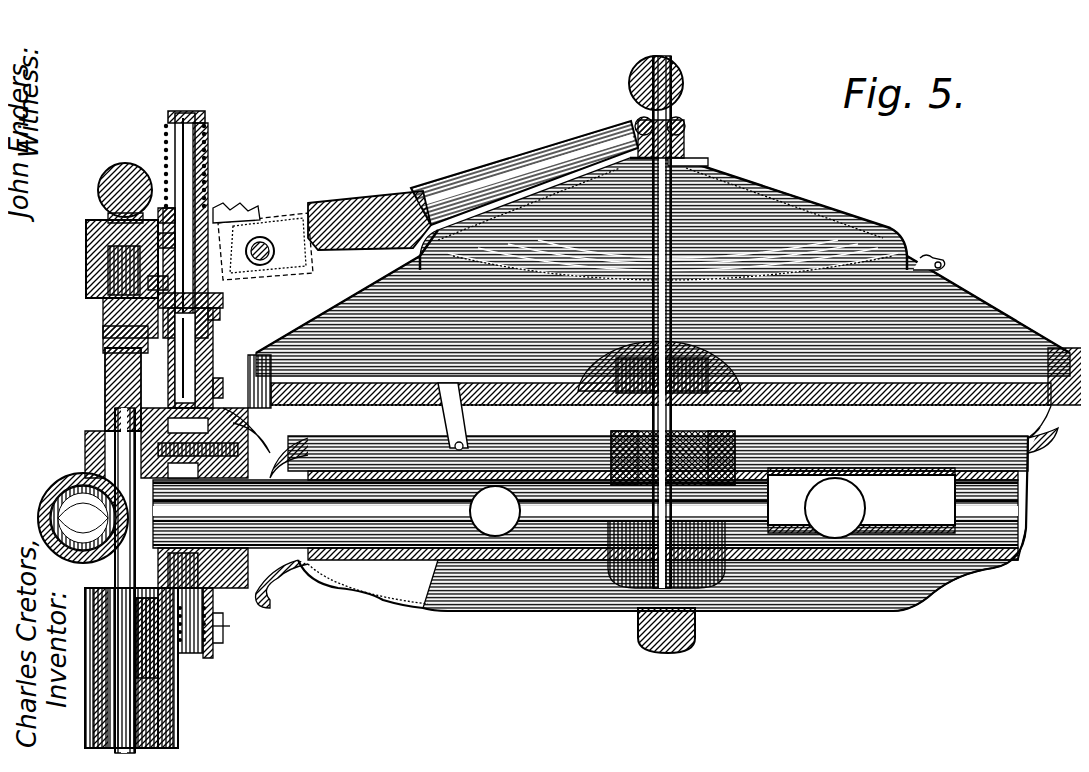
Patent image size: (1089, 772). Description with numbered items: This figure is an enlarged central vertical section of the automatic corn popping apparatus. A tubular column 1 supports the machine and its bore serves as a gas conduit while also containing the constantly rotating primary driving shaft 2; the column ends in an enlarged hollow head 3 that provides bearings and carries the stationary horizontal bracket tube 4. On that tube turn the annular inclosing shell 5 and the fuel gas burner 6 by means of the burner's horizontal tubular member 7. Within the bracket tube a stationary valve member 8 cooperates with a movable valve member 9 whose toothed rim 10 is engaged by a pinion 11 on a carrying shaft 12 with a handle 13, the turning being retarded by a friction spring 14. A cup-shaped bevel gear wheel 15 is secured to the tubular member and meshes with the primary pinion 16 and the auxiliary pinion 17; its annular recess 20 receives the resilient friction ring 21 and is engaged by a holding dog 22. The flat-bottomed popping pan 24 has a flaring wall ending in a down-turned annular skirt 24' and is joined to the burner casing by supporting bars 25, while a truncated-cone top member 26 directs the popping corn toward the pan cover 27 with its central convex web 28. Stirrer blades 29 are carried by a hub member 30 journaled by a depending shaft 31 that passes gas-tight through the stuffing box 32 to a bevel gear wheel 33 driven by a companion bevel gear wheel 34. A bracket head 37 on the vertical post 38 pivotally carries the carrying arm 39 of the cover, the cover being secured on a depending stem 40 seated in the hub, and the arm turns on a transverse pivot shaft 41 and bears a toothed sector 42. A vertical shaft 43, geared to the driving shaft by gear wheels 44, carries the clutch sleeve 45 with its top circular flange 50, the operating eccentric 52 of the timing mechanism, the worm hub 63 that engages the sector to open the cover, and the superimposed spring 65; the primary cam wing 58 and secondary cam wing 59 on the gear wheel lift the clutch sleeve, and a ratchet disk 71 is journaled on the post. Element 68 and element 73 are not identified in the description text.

The tubular column 1 is at (165, 712).
The primary driving shaft 2 is at (132, 690).
The hollow head 3 is at (45, 477).
The bracket tube 4 is at (352, 560).
The inclosing shell 5 is at (836, 430).
The fuel gas burner 6 is at (826, 478).
The tubular member 7 is at (506, 442).
The stationary valve member 8 is at (585, 514).
The movable valve member 9 is at (216, 522).
The toothed rim 10 is at (194, 453).
The pinion 11 is at (168, 547).
The carrying shaft 12 is at (185, 640).
The handle 13 is at (202, 640).
The friction spring 14 is at (140, 616).
The cup-shaped bevel gear wheel 15 is at (272, 440).
The primary pinion 16 is at (98, 390).
The auxiliary pinion 17 is at (98, 405).
The annular recess 20 is at (230, 406).
The friction ring 21 is at (236, 418).
The holding dog 22 is at (518, 511).
The popping pan 24 is at (661, 417).
The annular skirt 24' is at (664, 362).
The supporting bars 25 is at (446, 415).
The top member 26 is at (335, 312).
The pan cover 27 is at (795, 200).
The convex web 28 is at (702, 262).
The stirrer blades 29 is at (822, 396).
The hub member 30 is at (738, 380).
The depending shaft 31 is at (688, 420).
The stuffing box 32 is at (614, 425).
The bevel gear wheel 33 is at (666, 554).
The companion bevel gear wheel 34 is at (666, 595).
The bracket head 37 is at (80, 266).
The vertical post 38 is at (95, 300).
The carrying arm 39 is at (382, 192).
The depending stem 40 is at (702, 160).
The pivot shaft 41 is at (258, 233).
The toothed sector 42 is at (246, 215).
The vertical shaft 43 is at (170, 160).
The gear wheels 44 is at (62, 450).
The clutch sleeve 45 is at (205, 330).
The top circular flange 50 is at (212, 306).
The operating eccentric 52 is at (215, 292).
The primary cam wing 58 is at (207, 390).
The secondary cam wing 59 is at (218, 628).
The worm hub 63 is at (200, 205).
The spring 65 is at (198, 120).
The pump ball 68 is at (83, 518).
The ratchet disk 71 is at (96, 322).
The pin 73 is at (159, 281).